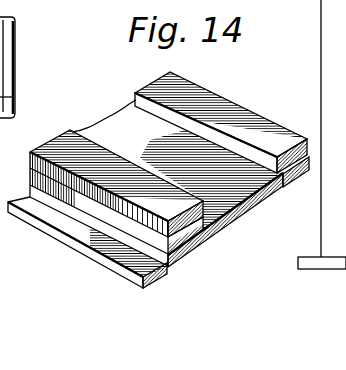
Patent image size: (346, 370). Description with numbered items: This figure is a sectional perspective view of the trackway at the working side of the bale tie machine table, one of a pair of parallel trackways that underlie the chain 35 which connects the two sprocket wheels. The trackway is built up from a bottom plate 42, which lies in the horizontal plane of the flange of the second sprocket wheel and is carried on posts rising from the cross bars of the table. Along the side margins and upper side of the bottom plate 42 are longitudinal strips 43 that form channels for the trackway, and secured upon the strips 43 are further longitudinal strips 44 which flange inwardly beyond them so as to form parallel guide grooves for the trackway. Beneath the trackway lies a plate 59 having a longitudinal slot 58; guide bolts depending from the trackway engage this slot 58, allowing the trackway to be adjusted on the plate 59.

The chain 35 is at (29, 62).
The bottom plate 42 is at (266, 199).
The longitudinal strip 43 is at (300, 174).
The longitudinal strip 44 is at (168, 169).
The longitudinal slot 58 is at (170, 266).
The plate 59 is at (70, 237).